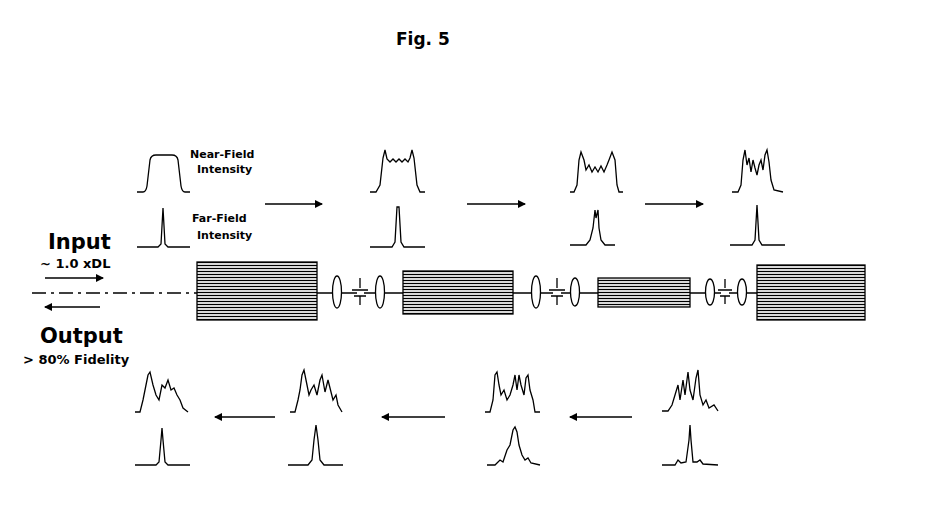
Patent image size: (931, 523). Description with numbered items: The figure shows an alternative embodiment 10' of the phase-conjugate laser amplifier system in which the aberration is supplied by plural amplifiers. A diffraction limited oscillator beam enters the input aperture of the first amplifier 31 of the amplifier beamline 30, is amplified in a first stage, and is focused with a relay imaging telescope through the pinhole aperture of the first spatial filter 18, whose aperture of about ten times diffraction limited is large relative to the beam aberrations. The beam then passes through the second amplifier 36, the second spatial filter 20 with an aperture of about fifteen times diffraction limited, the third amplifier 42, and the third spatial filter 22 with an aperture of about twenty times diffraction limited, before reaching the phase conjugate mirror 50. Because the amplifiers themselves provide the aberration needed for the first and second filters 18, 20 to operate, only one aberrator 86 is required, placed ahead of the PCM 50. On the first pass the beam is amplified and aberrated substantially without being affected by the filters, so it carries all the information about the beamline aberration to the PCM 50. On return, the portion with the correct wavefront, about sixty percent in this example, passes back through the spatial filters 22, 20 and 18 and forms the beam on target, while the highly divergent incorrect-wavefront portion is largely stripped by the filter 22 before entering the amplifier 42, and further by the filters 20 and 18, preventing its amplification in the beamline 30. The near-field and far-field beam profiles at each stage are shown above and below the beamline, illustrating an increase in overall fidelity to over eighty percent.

The alternative embodiment amplifier system 10' is at (394, 176).
The first spatial filter 18 is at (359, 274).
The second spatial filter 20 is at (558, 275).
The third spatial filter 22 is at (724, 276).
The amplifier beamline 30 is at (401, 373).
The first amplifier 31 is at (234, 320).
The second amplifier 36 is at (457, 314).
The third amplifier 42 is at (643, 307).
The phase conjugate mirror 50 is at (807, 320).
The aberrator 86 is at (746, 289).